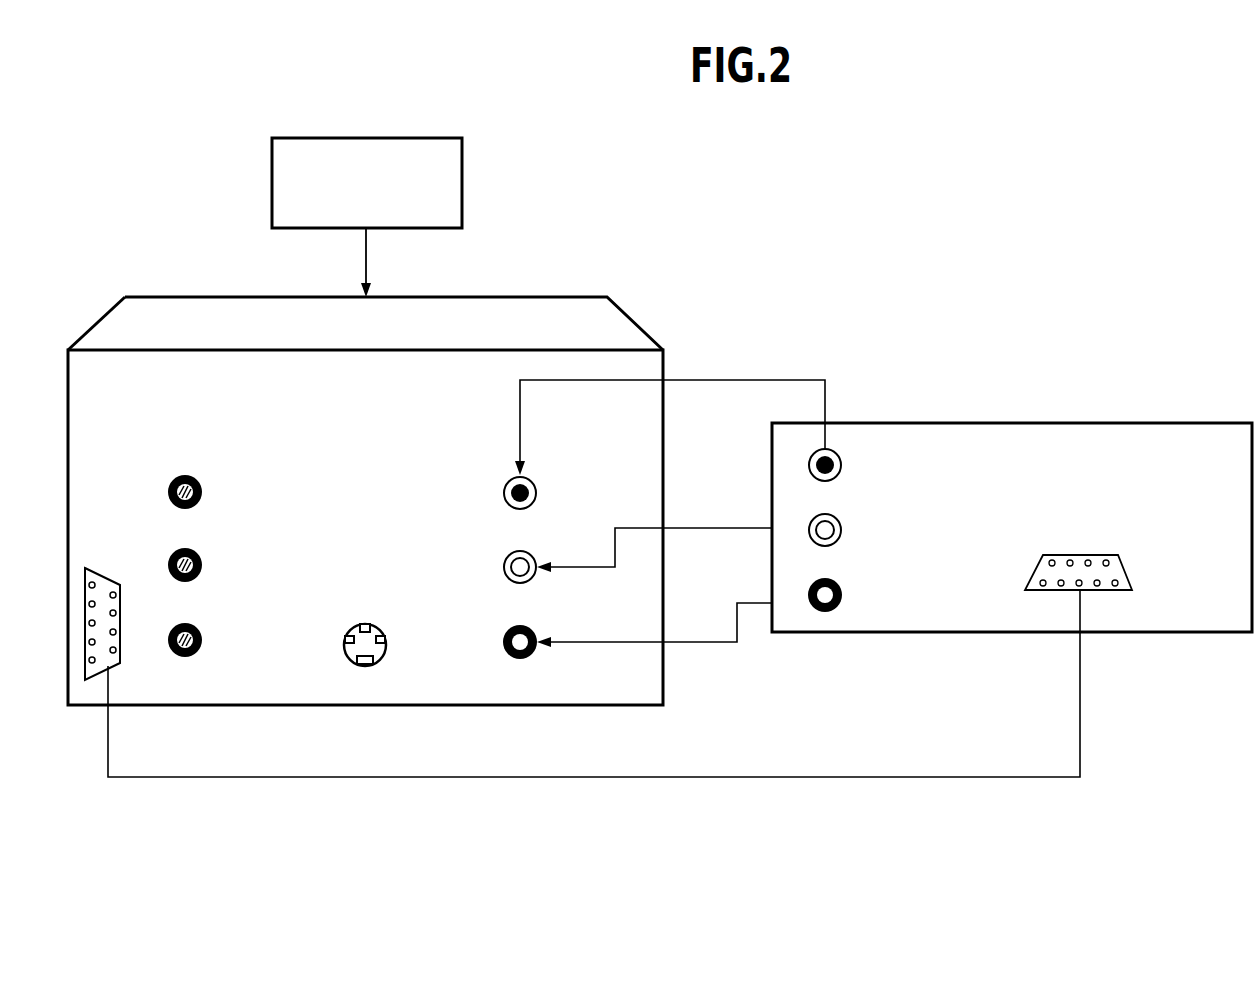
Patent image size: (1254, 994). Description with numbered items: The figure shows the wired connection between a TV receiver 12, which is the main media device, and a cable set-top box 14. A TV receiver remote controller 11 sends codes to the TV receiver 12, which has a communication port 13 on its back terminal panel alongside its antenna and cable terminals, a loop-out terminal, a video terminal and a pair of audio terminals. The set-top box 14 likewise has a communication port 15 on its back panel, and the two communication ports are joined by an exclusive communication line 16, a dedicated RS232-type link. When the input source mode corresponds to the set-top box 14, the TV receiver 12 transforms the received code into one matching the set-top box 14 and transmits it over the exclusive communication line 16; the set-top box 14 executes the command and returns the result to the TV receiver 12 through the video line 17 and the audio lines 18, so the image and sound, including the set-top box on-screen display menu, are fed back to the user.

The TV receiver remote controller 11 is at (462, 182).
The TV receiver 12 is at (557, 297).
The communication port of the TV receiver 13 is at (99, 568).
The set-top box 14 is at (1178, 423).
The communication port of the set-top box 15 is at (1126, 566).
The exclusive communication line 16 is at (771, 777).
The video line 17 is at (733, 380).
The audio lines 18 is at (692, 528).